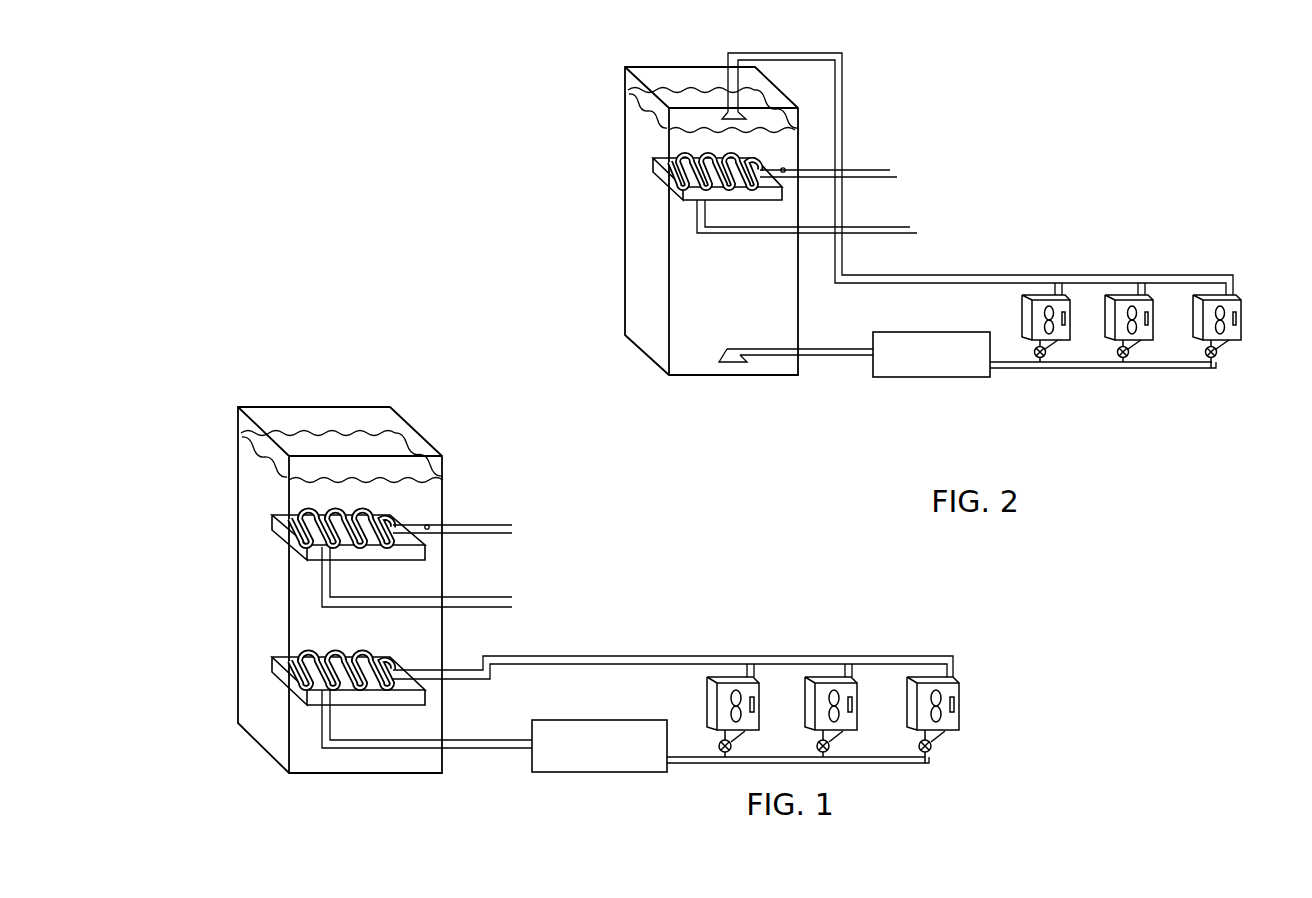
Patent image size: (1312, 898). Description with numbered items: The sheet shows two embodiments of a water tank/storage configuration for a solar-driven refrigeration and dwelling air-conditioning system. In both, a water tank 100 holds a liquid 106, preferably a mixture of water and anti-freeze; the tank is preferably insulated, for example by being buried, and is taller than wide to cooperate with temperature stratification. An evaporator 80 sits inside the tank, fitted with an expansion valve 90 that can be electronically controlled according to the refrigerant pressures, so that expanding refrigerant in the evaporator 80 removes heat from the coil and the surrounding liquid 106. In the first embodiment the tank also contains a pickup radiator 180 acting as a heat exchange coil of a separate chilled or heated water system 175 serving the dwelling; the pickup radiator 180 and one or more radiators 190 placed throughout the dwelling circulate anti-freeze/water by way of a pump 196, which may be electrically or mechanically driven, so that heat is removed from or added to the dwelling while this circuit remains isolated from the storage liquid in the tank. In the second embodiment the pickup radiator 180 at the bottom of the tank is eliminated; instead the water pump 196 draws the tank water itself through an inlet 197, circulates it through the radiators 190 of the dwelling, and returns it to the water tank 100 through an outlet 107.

In FIG. 1, the water tank 100 is at (444, 501).
In FIG. 1, the liquid 106 is at (340, 430).
In FIG. 2, the liquid 106 is at (712, 88).
In FIG. 2, the outlet 107 is at (788, 118).
In FIG. 1, the evaporator 80 is at (282, 545).
In FIG. 2, the evaporator 80 is at (660, 181).
In FIG. 1, the expansion valve 90 is at (425, 532).
In FIG. 1, the pickup radiator 180 is at (362, 660).
In FIG. 1, the radiators 190 is at (705, 691).
In FIG. 2, the radiators 190 is at (1020, 311).
In FIG. 1, the pump 196 is at (645, 772).
In FIG. 2, the pump 196 is at (975, 377).
In FIG. 2, the inlet 197 is at (733, 372).
In FIG. 1, the chilled (or heated) water system 175 is at (497, 770).
In FIG. 2, the chilled (or heated) water system 175 is at (848, 370).